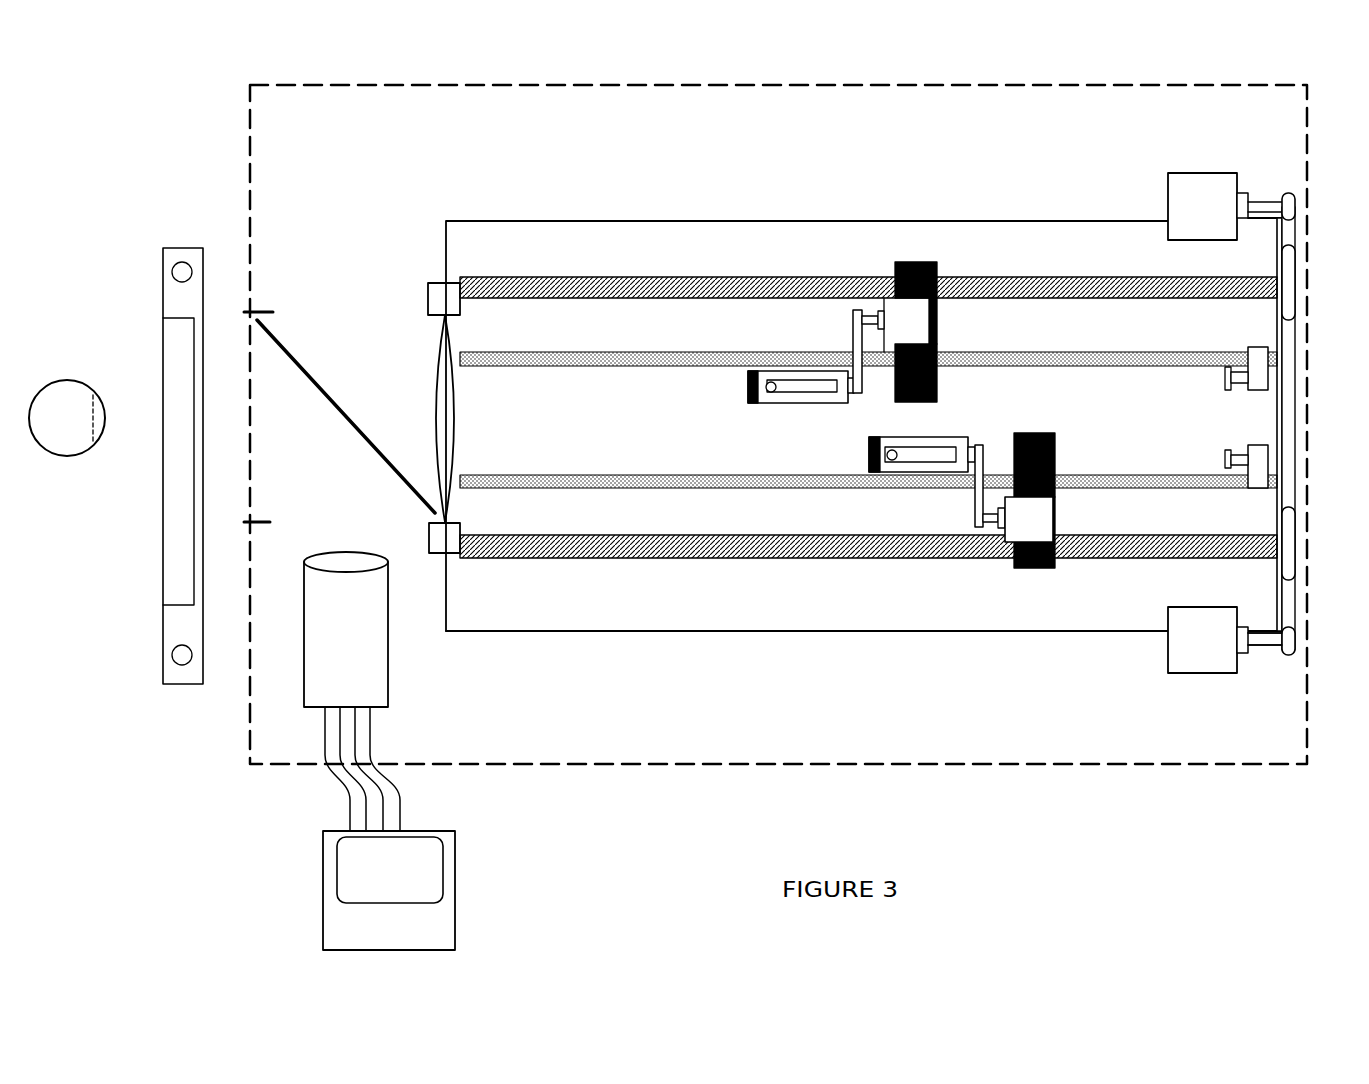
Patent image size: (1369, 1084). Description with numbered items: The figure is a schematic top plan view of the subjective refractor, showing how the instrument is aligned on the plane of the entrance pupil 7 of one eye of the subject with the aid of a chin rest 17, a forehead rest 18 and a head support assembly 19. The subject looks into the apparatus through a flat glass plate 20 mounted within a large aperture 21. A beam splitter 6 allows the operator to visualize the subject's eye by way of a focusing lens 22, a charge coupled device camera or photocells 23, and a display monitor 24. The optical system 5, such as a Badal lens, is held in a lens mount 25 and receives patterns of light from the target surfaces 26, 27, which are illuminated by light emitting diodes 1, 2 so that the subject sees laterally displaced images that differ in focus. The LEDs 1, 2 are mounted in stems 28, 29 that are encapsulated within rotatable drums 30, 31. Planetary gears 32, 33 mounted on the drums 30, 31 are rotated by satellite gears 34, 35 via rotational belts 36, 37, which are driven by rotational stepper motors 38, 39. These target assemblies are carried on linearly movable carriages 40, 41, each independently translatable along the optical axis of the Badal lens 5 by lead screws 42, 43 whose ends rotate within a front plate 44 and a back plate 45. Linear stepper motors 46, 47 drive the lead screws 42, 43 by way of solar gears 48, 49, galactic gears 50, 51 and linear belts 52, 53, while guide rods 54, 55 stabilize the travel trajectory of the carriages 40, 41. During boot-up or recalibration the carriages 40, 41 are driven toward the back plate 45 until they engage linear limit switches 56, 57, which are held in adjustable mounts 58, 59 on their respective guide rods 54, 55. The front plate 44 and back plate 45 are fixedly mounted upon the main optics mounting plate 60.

The light emitting diode 1 is at (885, 462).
The light emitting diode 2 is at (760, 402).
The optical system 5 is at (437, 375).
The beam splitter 6 is at (360, 430).
The entrance pupil 7 is at (110, 418).
The chin rest 17 is at (163, 530).
The forehead rest 18 is at (177, 308).
The head support assembly 19 is at (192, 275).
The flat glass plate 20 is at (251, 430).
The large aperture 21 is at (262, 312).
The focusing lens 22 is at (362, 553).
The charge coupled device camera 23 is at (389, 668).
The display monitor 24 is at (455, 857).
The lens mount 25 is at (430, 285).
The target surface 26 is at (869, 447).
The target surface 27 is at (748, 386).
The stem 28 is at (925, 462).
The stem 29 is at (800, 378).
The rotatable drum 30 is at (965, 436).
The rotatable drum 31 is at (803, 405).
The planetary gear 32 is at (985, 450).
The planetary gear 33 is at (860, 392).
The satellite gear 34 is at (978, 530).
The satellite gear 35 is at (852, 318).
The rotational belt 36 is at (978, 490).
The rotational belt 37 is at (860, 345).
The rotational stepper motor 38 is at (1043, 530).
The rotational stepper motor 39 is at (925, 322).
The linearly movable carriage 40 is at (1048, 460).
The linearly movable carriage 41 is at (930, 380).
The lead screw 42 is at (600, 545).
The lead screw 43 is at (565, 285).
The front plate 44 is at (446, 240).
The back plate 45 is at (1281, 412).
The linear stepper motor 46 is at (1210, 660).
The linear stepper motor 47 is at (1200, 195).
The solar gear 48 is at (1283, 645).
The solar gear 49 is at (1288, 193).
The galactic gear 50 is at (1292, 537).
The galactic gear 51 is at (1290, 295).
The linear belt 52 is at (1295, 640).
The linear belt 53 is at (1292, 235).
The guide rod 54 is at (615, 478).
The guide rod 55 is at (540, 368).
The linear limit switch 56 is at (1228, 458).
The linear limit switch 57 is at (1228, 380).
The adjustable mount 58 is at (1270, 455).
The adjustable mount 59 is at (1255, 352).
The main optics mounting plate 60 is at (753, 605).